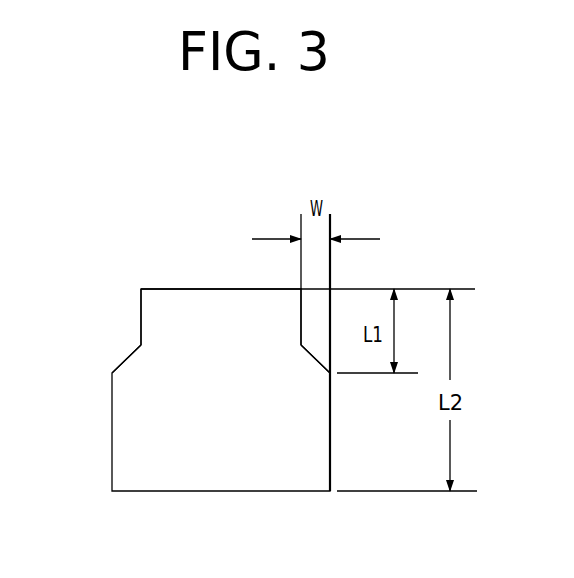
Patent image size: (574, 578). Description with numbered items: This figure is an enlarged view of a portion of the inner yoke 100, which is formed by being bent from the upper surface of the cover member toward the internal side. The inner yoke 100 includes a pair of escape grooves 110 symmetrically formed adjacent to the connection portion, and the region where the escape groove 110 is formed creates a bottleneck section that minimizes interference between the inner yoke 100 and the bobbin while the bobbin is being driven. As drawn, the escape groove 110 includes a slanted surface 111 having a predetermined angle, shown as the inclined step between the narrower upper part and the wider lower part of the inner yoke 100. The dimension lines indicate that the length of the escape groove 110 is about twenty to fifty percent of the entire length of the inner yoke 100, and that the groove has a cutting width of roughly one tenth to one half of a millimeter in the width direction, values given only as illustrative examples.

The inner yoke 100 is at (75, 201).
The escape groove 110 is at (135, 313).
The slanted surface 111 is at (120, 355).